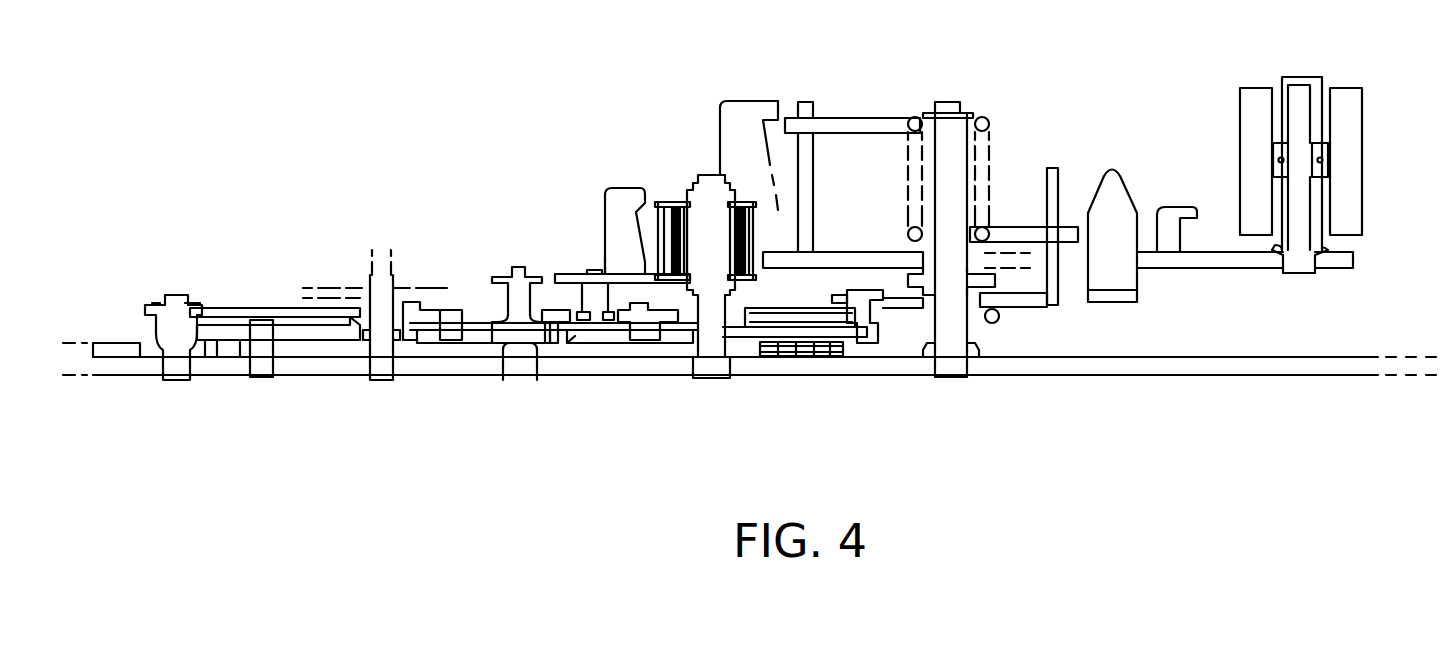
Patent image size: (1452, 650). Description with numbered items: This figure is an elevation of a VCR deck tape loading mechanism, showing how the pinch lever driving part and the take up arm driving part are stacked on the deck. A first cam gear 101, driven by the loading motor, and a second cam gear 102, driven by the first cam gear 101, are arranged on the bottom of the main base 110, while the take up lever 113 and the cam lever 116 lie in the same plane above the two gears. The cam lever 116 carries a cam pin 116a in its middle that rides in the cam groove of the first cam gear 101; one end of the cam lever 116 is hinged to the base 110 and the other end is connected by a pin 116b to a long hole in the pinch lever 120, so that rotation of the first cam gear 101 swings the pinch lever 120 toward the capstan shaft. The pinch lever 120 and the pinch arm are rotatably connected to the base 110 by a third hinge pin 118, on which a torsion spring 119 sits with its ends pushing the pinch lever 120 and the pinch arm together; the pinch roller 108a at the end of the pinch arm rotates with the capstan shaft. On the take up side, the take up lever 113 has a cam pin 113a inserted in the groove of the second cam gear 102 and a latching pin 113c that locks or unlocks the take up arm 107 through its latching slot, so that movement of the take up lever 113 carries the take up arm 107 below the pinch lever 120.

The first cam gear 101 is at (815, 337).
The second cam gear 102 is at (300, 333).
The take up arm 107 is at (600, 275).
The pinch roller 108a is at (1255, 102).
The base 110 is at (1107, 360).
The take up lever 113 is at (257, 313).
The cam pin 113a is at (460, 310).
The latching pin 113c is at (582, 298).
The cam lever 116 is at (625, 315).
The cam pin 116a is at (645, 305).
The pin 116b is at (872, 313).
The third hinge pin 118 is at (950, 103).
The torsion spring 119 is at (872, 120).
The pinch lever 120 is at (1053, 168).